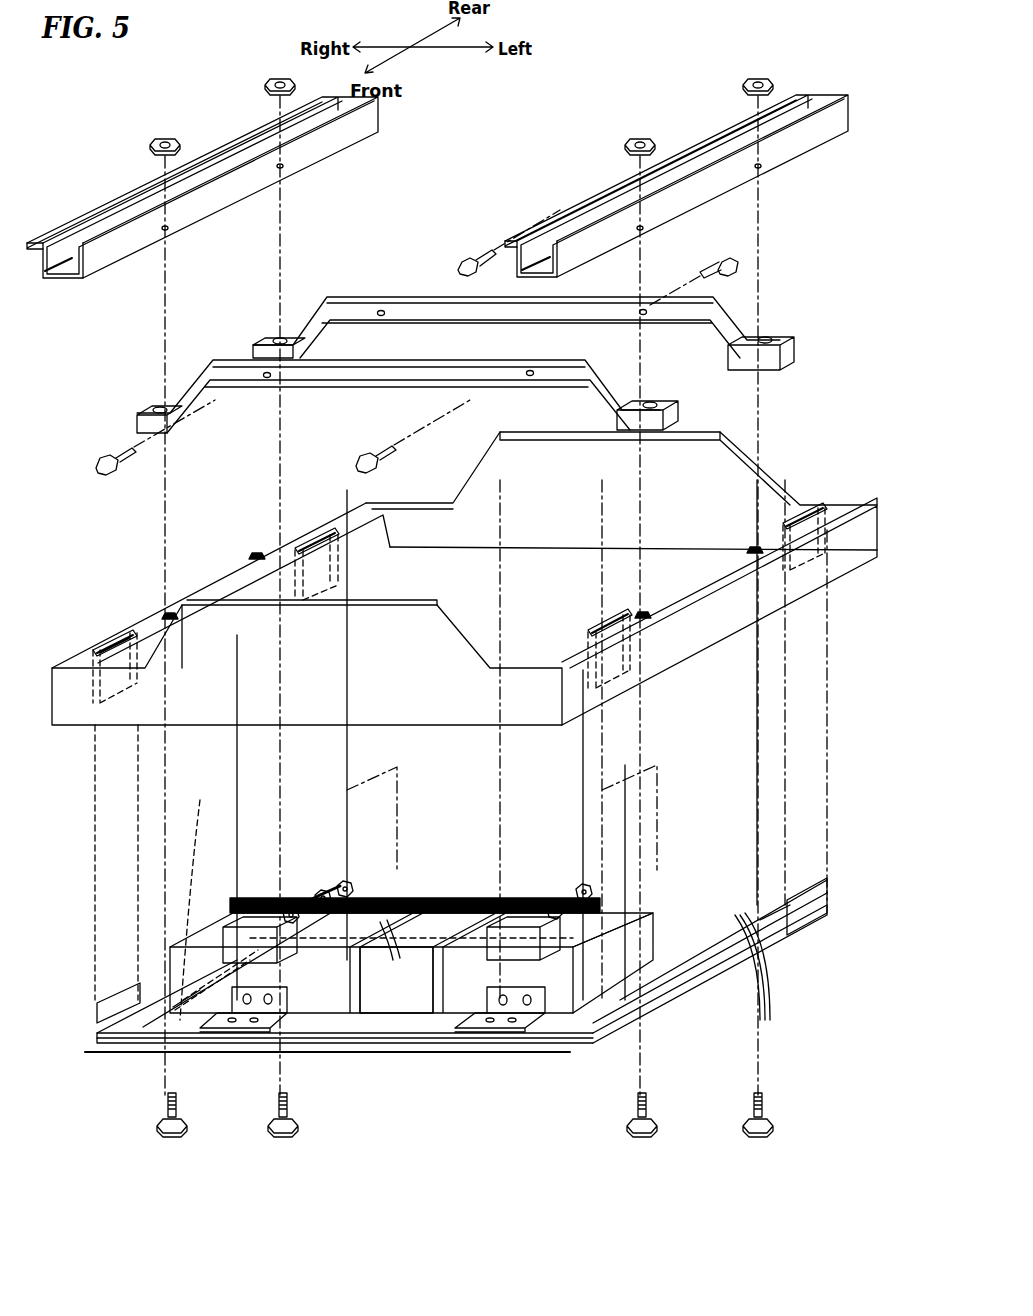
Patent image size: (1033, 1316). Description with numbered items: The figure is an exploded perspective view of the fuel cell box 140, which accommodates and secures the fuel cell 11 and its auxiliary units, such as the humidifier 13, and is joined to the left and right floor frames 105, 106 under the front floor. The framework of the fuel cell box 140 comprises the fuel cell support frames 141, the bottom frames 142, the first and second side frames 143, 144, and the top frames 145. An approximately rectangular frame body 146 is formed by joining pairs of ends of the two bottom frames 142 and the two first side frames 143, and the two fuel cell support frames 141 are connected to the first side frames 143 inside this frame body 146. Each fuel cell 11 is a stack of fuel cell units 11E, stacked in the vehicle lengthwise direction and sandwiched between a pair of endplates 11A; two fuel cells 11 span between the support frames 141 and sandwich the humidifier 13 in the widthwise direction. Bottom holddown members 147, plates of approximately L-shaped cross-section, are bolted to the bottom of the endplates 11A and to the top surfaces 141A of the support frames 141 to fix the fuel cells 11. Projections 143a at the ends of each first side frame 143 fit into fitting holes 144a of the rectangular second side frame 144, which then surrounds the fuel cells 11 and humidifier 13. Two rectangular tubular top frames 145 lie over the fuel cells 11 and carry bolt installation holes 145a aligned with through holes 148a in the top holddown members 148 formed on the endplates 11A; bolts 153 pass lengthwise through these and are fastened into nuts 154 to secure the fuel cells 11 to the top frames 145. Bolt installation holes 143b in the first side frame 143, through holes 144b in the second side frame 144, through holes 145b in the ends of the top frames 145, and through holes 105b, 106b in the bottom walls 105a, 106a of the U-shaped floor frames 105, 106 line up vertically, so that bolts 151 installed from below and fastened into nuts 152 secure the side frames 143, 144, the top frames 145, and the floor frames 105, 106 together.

The fuel cell box 140 is at (496, 122).
The nuts 152 is at (268, 78).
The floor frame 106 is at (222, 138).
The bottom wall 106a is at (48, 262).
The through holes 106b is at (284, 167).
The floor frame 105 is at (806, 126).
The bottom wall 105a is at (542, 258).
The through holes 105b is at (762, 168).
The bolts 153 is at (462, 258).
The top frames 145 is at (258, 346).
The bolt installation holes 145a is at (381, 309).
The through holes 145b is at (276, 342).
The second side frame 144 is at (65, 655).
The fitting holes 144a is at (805, 505).
The through holes 144b is at (170, 612).
The first side frame 143 is at (825, 977).
The projections 143a is at (352, 892).
The bolt installation holes 143b is at (173, 1007).
The fuel cell 11 is at (232, 940).
The endplates 11A is at (480, 862).
The fuel cell units 11E is at (765, 1015).
The humidifier 13 is at (390, 995).
The nuts 154 is at (300, 912).
The top holddown members 148 is at (265, 900).
The through holes 148a is at (356, 892).
The bottom holddown members 147 is at (265, 1030).
The frame body 146 is at (88, 1054).
The fuel cell support frames 141 is at (157, 1055).
The top surfaces 141A is at (143, 1050).
The bottom frames 142 is at (823, 943).
The bolts 151 is at (173, 1140).